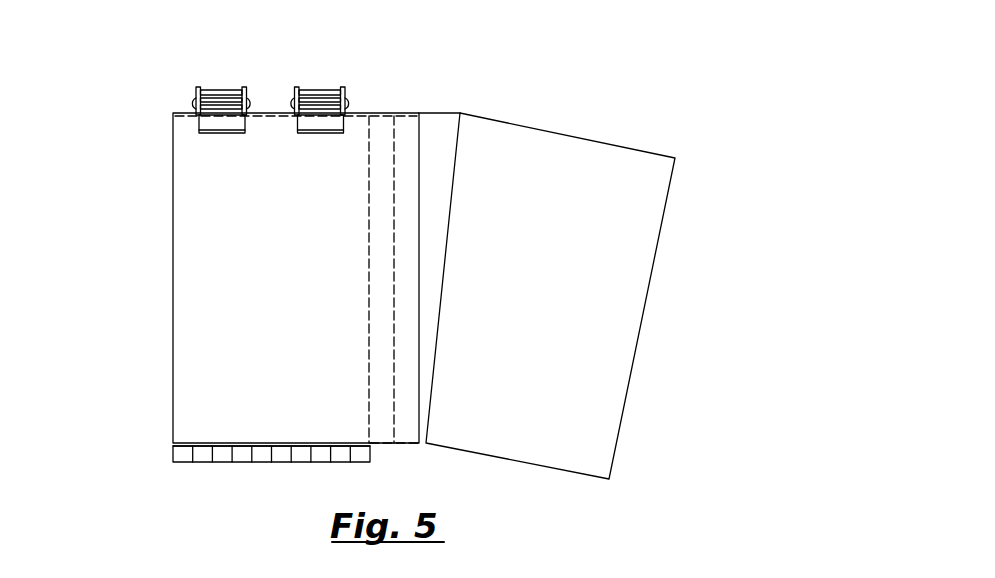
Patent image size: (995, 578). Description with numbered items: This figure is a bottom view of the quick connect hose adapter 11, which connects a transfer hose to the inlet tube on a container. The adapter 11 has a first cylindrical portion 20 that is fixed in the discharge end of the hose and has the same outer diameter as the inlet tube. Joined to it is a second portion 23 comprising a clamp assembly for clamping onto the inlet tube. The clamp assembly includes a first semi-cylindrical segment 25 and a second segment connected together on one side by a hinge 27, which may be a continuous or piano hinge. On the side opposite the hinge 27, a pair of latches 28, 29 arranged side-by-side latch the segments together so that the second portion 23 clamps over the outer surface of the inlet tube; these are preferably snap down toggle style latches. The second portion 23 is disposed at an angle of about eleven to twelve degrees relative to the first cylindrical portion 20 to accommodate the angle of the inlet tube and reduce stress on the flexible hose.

The quick connect hose adapter 11 is at (255, 279).
The first cylindrical portion 20 is at (560, 157).
The second portion 23 is at (388, 110).
The first semi-cylindrical segment 25 is at (202, 292).
The hinge 27 is at (207, 456).
The latch 28 is at (211, 88).
The latch 29 is at (313, 95).